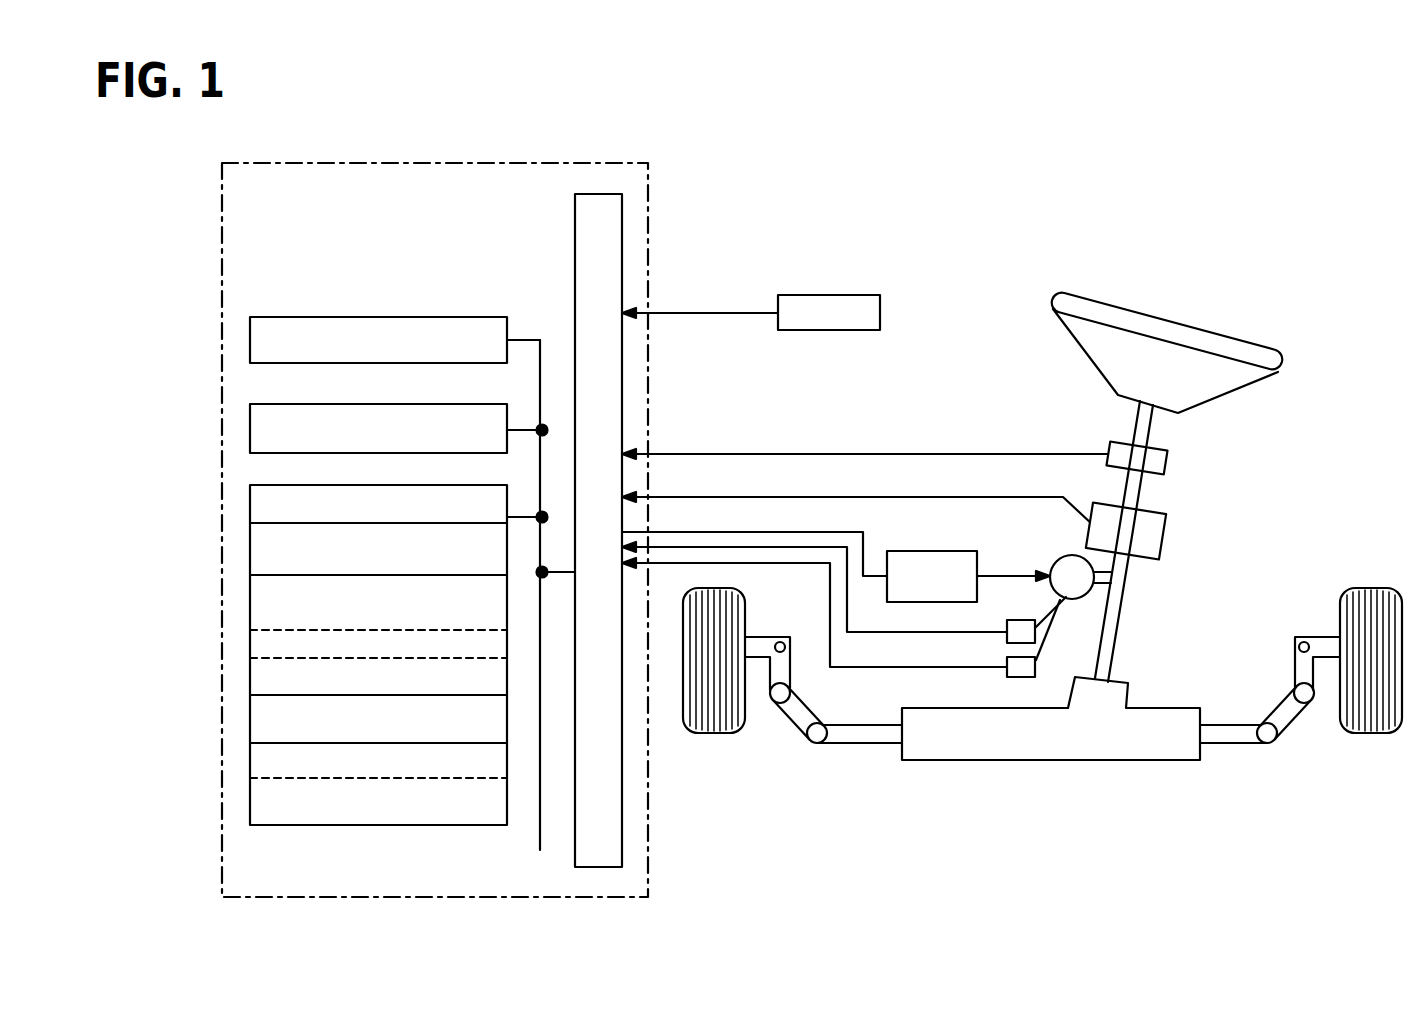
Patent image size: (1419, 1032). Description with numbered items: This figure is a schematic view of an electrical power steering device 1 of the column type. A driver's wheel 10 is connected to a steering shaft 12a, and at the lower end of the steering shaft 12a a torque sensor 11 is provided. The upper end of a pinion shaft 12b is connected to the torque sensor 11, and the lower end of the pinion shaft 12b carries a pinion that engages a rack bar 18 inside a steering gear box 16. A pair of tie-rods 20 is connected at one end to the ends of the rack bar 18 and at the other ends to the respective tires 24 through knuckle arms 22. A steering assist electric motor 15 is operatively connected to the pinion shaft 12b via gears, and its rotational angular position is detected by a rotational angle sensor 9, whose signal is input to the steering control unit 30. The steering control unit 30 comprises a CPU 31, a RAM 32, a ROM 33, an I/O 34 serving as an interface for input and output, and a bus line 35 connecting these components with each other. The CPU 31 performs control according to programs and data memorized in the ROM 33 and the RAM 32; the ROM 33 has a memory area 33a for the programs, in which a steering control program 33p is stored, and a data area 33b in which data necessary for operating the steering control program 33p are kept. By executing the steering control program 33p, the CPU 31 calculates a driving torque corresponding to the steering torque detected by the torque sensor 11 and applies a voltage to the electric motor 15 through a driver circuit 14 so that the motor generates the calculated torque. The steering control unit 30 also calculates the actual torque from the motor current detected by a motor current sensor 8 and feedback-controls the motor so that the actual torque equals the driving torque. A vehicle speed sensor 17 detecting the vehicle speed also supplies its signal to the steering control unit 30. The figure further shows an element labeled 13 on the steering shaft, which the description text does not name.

The electrical power steering device 1 is at (1136, 170).
The motor current sensor 8 is at (1015, 676).
The rotational angle sensor 9 is at (1027, 620).
The driver's wheel 10 is at (1175, 322).
The torque sensor 11 is at (1160, 531).
The steering shaft 12a is at (1140, 418).
The pinion shaft 12b is at (1110, 672).
The steering angle sensor 13 is at (1167, 460).
The driver circuit 14 is at (922, 551).
The electric motor 15 is at (1057, 558).
The steering gear box 16 is at (1065, 762).
The vehicle speed sensor 17 is at (826, 295).
The rack bar 18 is at (853, 746).
The tie-rod 20 is at (795, 722).
The knuckle arm 22 is at (765, 640).
The tire 24 is at (703, 735).
The steering control unit 30 is at (455, 163).
The CPU 31 is at (458, 317).
The RAM 32 is at (458, 404).
The ROM 33 is at (460, 485).
The memory area for the programs 33a is at (250, 565).
The steering control program 33p is at (250, 600).
The data area 33b is at (250, 720).
The I/O 34 is at (575, 850).
The bus line 35 is at (540, 828).